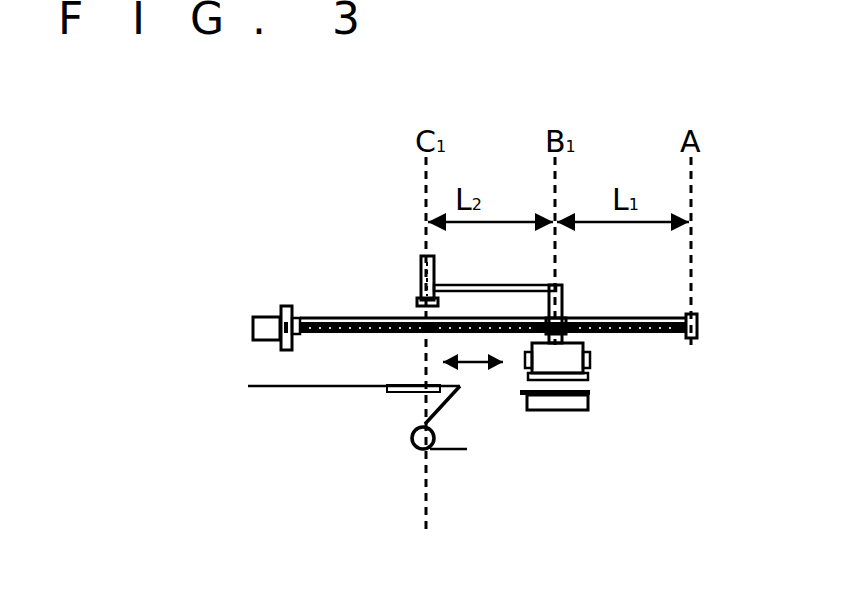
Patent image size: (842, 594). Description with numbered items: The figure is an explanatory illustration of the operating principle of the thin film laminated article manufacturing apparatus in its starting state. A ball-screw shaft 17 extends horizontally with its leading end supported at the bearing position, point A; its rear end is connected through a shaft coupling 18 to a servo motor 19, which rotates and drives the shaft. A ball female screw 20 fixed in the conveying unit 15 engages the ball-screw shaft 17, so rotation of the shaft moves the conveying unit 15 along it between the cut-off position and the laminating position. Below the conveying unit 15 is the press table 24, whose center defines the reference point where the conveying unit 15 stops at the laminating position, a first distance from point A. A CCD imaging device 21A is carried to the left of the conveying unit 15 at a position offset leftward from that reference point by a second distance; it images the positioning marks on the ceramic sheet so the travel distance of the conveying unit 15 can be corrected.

The conveying unit 15 is at (572, 362).
The ball-screw shaft 17 is at (340, 340).
The shaft coupling 18 is at (284, 314).
The servo motor 19 is at (259, 312).
The ball female screw 20 is at (547, 334).
The CCD imaging device 21A is at (418, 262).
The press table 24 is at (555, 410).